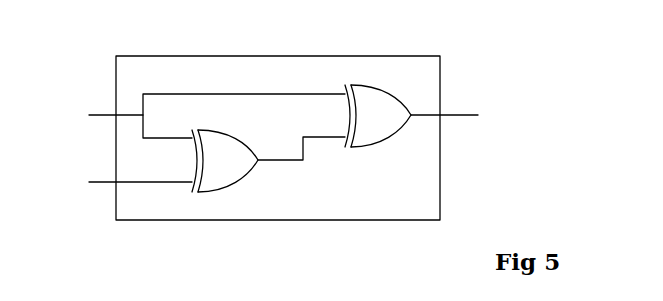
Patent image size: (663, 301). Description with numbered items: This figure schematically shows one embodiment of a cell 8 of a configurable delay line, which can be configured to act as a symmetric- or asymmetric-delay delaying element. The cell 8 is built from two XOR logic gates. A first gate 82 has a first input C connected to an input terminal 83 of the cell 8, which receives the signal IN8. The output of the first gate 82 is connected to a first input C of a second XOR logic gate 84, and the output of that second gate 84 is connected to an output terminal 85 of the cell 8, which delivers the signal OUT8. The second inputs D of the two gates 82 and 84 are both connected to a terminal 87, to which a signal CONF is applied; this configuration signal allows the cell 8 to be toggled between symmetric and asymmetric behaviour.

The cell 8 is at (274, 56).
The first gate 82 is at (234, 184).
The input terminal 83 is at (116, 183).
The second XOR logic gate 84 is at (396, 147).
The output terminal 85 is at (440, 115).
The terminal 87 is at (116, 115).